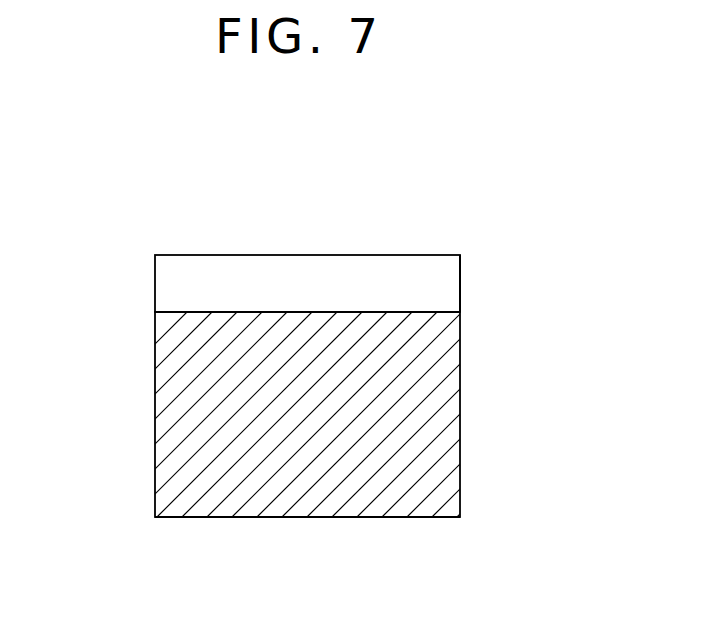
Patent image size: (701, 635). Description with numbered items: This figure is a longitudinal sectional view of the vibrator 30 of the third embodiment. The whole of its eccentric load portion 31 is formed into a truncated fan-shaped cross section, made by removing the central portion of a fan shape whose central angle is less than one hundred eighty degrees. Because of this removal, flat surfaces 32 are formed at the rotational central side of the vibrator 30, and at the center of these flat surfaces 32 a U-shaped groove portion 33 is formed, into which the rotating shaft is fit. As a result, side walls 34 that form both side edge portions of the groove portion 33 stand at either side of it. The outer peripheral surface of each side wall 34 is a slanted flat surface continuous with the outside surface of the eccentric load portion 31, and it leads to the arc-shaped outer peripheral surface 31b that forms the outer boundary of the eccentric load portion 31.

The vibrator 30 is at (120, 483).
The eccentric load portion 31 is at (448, 432).
The arc-shaped outer peripheral surface 31b is at (293, 517).
The flat surfaces 32 is at (230, 255).
The U-shaped groove portion 33 is at (273, 312).
The side walls 34 is at (425, 268).